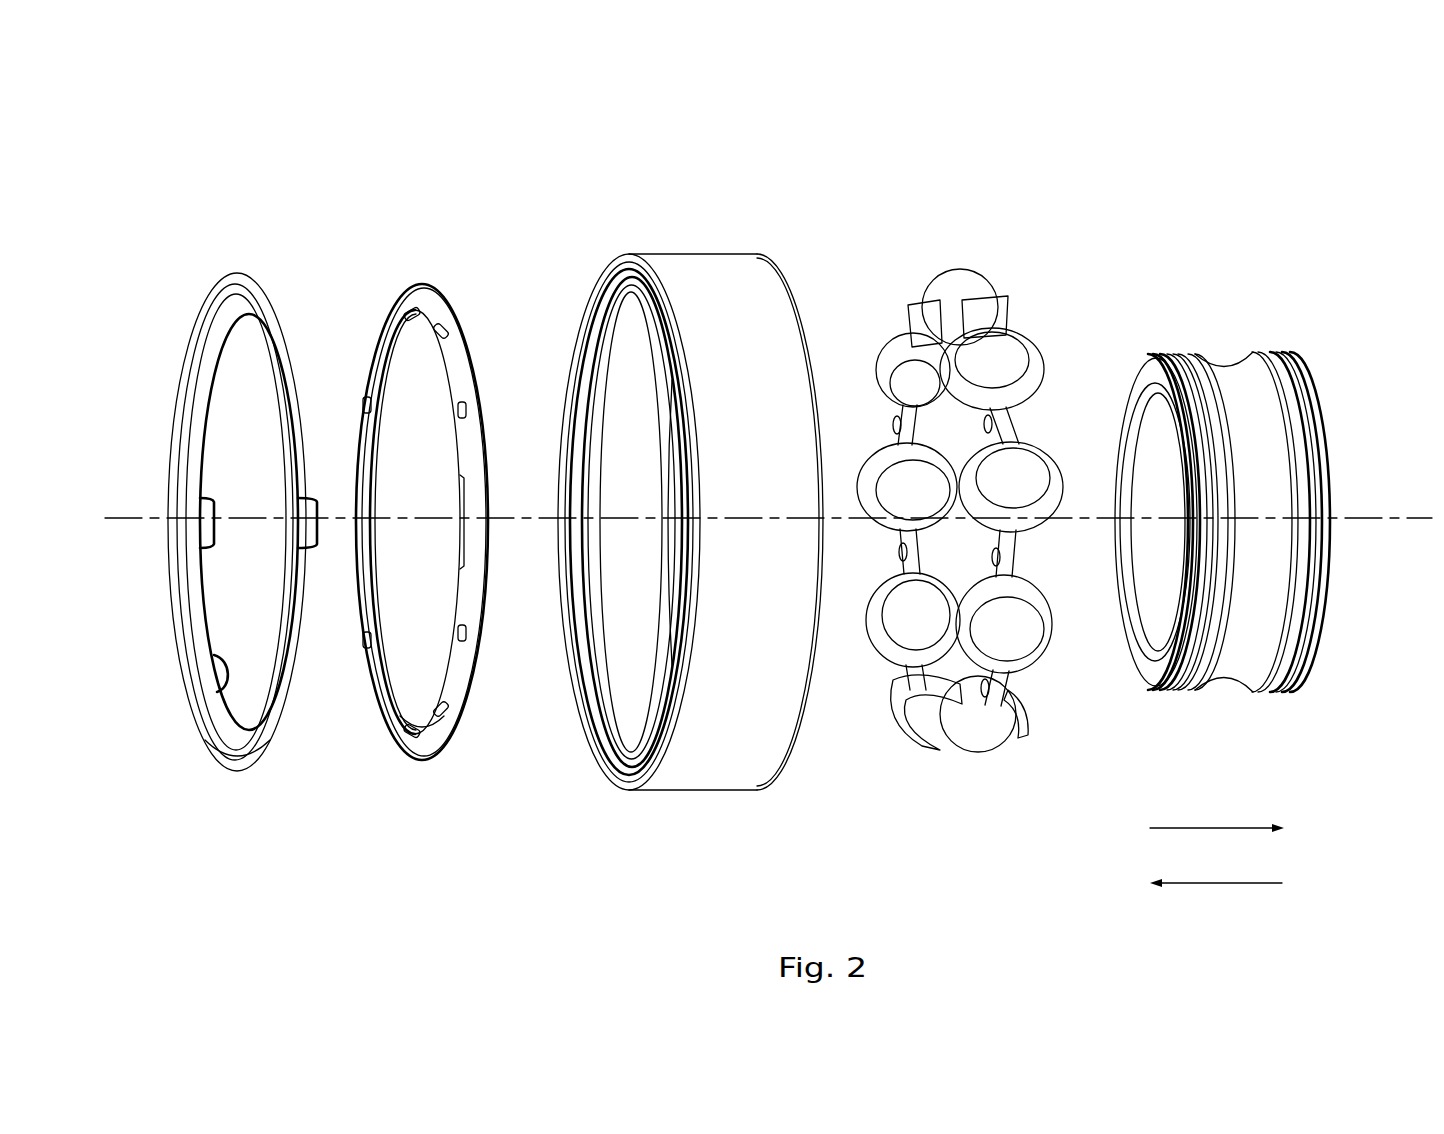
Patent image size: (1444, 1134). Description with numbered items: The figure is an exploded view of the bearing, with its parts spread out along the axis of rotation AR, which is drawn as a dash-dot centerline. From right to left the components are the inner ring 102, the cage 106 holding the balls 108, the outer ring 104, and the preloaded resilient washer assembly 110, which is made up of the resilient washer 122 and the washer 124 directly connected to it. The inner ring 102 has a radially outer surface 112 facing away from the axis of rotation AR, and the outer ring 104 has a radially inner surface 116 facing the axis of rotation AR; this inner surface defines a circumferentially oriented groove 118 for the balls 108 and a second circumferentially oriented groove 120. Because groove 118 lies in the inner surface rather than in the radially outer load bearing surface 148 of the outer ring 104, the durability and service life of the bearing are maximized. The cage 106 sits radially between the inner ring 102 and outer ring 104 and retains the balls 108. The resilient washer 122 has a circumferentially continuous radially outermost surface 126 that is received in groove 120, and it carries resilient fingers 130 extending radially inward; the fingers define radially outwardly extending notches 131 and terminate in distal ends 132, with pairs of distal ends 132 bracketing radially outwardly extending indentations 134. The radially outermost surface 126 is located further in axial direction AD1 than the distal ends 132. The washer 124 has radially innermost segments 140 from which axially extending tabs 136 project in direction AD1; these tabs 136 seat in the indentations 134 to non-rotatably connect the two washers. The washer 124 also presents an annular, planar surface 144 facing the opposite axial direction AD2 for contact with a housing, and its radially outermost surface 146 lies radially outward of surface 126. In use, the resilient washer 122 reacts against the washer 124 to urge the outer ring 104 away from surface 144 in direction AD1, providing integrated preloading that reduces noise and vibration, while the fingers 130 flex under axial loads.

The inner ring 102 is at (1239, 445).
The outer ring 104 is at (669, 505).
The cage 106 is at (1003, 352).
The balls 108 is at (963, 282).
The preloaded resilient washer assembly 110 is at (223, 135).
The radially outer surface 112 is at (1227, 357).
The radially inner surface 116 is at (632, 632).
The circumferentially oriented groove 118 is at (650, 345).
The circumferentially oriented groove 120 is at (588, 347).
The resilient washer 122 is at (433, 512).
The washer 124 is at (215, 499).
The radially outermost surface 126 is at (430, 758).
The resilient fingers 130 is at (424, 763).
The radially outwardly extending notches 131 is at (463, 638).
The distal ends 132 is at (457, 473).
The radially outwardly extending indentations 134 is at (458, 530).
The axially extending tabs 136 is at (218, 536).
The radially innermost segments 140 is at (218, 660).
The annular surface 144 is at (230, 286).
The radially outermost surface 146 is at (233, 776).
The radially outer load bearing surface 148 is at (735, 742).
The axis of rotation AR is at (1380, 545).
The axial direction AD1 is at (1190, 828).
The axial direction AD2 is at (1213, 883).